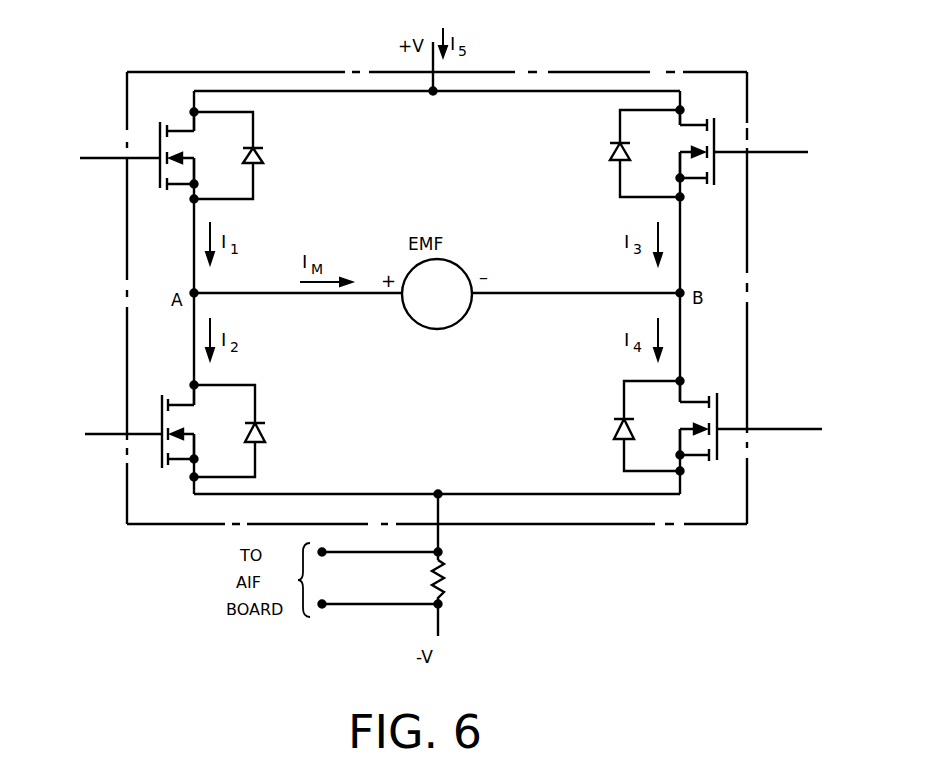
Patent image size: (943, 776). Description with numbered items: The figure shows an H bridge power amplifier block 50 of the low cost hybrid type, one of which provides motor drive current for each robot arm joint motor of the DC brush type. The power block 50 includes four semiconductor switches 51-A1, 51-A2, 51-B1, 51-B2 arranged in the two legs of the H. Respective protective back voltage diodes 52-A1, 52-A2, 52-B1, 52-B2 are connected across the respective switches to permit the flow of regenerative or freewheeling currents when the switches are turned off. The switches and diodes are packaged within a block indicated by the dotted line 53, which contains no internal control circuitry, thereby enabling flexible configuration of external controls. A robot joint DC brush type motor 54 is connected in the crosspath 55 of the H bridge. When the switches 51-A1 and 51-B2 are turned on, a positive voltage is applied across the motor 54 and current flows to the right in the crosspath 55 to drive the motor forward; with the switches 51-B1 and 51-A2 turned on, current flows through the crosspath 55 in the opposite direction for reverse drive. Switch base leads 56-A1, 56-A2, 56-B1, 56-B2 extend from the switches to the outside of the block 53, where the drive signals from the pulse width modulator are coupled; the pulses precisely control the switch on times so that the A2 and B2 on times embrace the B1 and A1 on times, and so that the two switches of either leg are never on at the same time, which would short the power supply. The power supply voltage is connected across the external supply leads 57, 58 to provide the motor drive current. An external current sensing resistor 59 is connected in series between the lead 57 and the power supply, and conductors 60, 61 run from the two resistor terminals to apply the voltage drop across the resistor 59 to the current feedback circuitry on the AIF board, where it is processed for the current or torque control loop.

The H bridge power amplifier block 50 is at (463, 375).
The semiconductor switch 51-A1 is at (158, 126).
The semiconductor switch 51-A2 is at (161, 396).
The semiconductor switch 51-B1 is at (714, 120).
The semiconductor switch 51-B2 is at (717, 395).
The protective back voltage diode 52-A1 is at (262, 150).
The protective back voltage diode 52-A2 is at (262, 437).
The protective back voltage diode 52-B1 is at (612, 152).
The protective back voltage diode 52-B2 is at (617, 436).
The block 53 is at (315, 72).
The robot joint DC brush type motor 54 is at (466, 320).
The crosspath 55 is at (556, 292).
The switch base lead 56-A1 is at (87, 162).
The switch base lead 56-A2 is at (110, 437).
The switch base lead 56-B1 is at (772, 156).
The switch base lead 56-B2 is at (783, 432).
The external supply lead 57 is at (441, 540).
The external supply lead 58 is at (430, 91).
The external current sensing resistor 59 is at (447, 577).
The conductor 60 is at (393, 552).
The conductor 61 is at (404, 606).